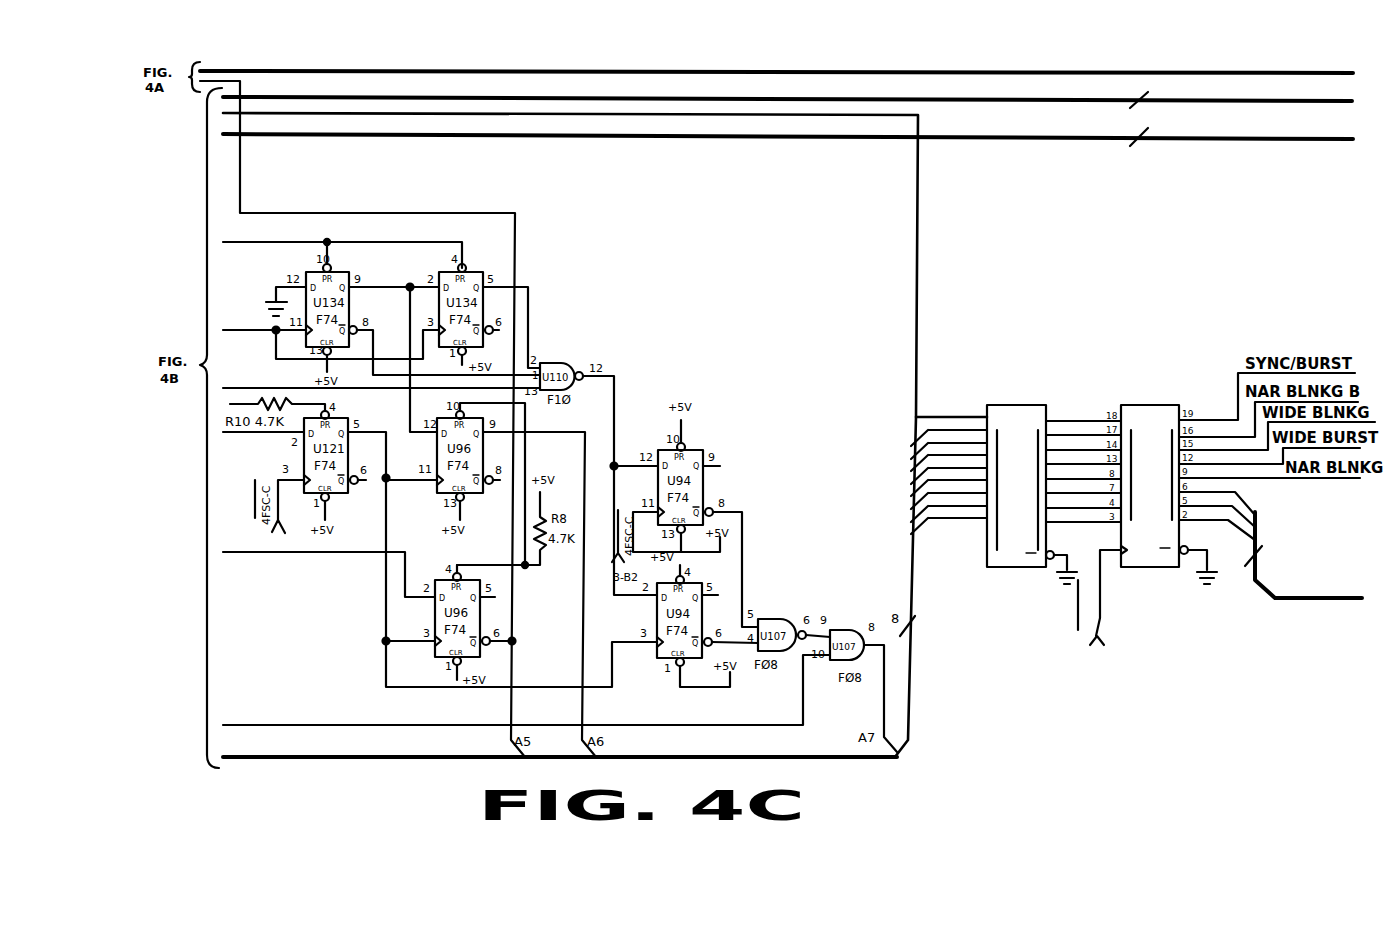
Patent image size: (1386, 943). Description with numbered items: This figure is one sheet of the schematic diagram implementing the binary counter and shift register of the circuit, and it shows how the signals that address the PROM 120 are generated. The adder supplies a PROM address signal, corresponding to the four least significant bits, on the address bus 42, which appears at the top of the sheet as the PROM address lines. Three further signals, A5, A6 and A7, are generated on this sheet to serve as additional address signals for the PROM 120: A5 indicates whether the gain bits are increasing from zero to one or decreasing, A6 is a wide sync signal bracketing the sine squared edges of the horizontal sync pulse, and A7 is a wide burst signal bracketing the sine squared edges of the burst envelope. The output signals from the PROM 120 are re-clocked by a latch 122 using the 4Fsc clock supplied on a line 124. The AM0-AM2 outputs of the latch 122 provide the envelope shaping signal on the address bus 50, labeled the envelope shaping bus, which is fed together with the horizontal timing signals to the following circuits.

The address bus 42 is at (1168, 72).
The address bus 50 is at (1281, 600).
The PROM 120 is at (986, 563).
The latch 122 is at (1137, 567).
The line 124 is at (1100, 618).